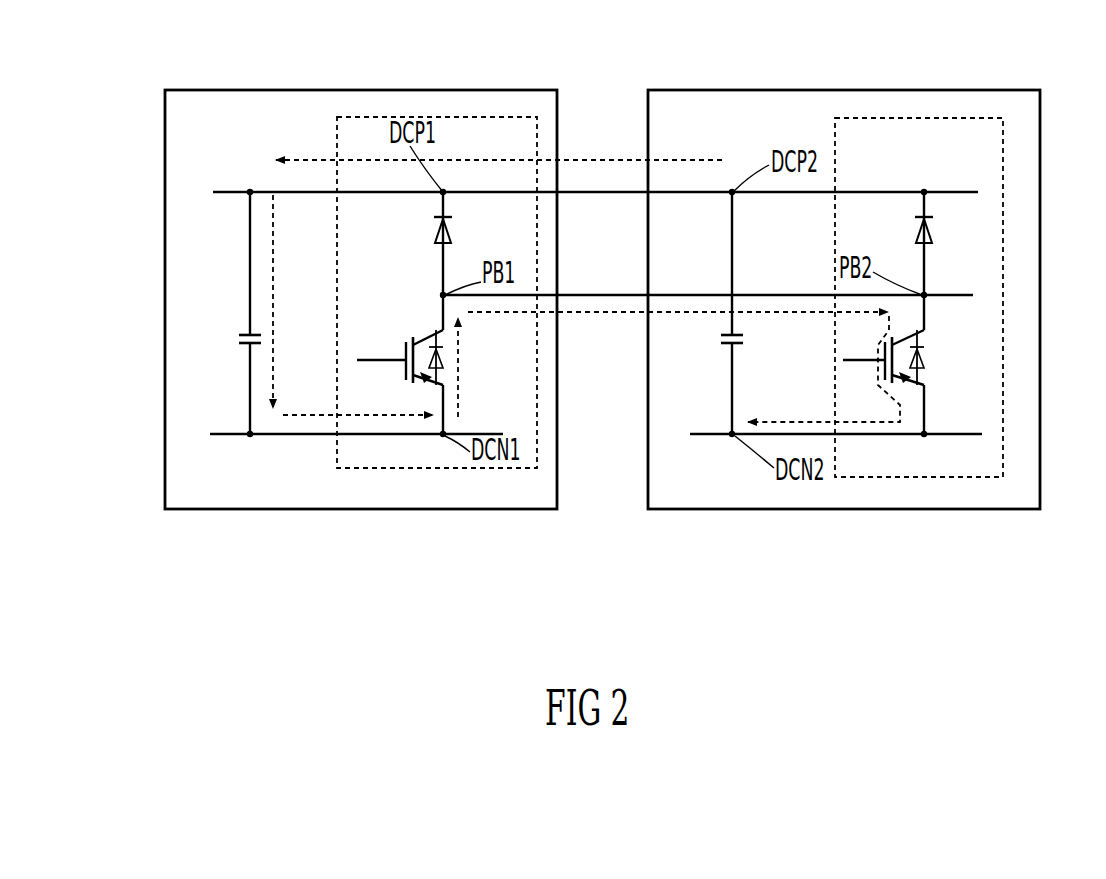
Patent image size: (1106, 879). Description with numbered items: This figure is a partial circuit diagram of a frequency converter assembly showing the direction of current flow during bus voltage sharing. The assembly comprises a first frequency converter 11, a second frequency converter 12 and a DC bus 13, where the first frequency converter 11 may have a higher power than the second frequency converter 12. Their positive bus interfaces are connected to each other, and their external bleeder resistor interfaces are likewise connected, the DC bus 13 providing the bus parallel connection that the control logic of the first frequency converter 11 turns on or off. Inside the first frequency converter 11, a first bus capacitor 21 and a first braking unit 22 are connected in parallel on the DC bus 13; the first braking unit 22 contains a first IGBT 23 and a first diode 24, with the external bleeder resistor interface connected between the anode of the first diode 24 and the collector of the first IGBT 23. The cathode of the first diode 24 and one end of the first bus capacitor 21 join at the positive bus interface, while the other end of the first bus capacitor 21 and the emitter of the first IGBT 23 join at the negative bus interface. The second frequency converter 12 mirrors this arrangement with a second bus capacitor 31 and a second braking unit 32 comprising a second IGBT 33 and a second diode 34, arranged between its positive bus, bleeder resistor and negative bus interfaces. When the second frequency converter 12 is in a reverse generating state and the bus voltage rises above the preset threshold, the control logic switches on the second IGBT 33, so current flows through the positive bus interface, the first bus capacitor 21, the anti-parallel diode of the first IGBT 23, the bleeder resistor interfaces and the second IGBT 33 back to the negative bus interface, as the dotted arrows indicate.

The first frequency converter 11 is at (462, 90).
The second frequency converter 12 is at (955, 90).
The DC bus 13 is at (218, 192).
The first bus capacitor 21 is at (246, 340).
The first braking unit 22 is at (522, 117).
The first IGBT 23 is at (418, 340).
The first diode 24 is at (450, 218).
The second bus capacitor 31 is at (728, 341).
The second braking unit 32 is at (1003, 188).
The second IGBT 33 is at (928, 333).
The second diode 34 is at (918, 218).